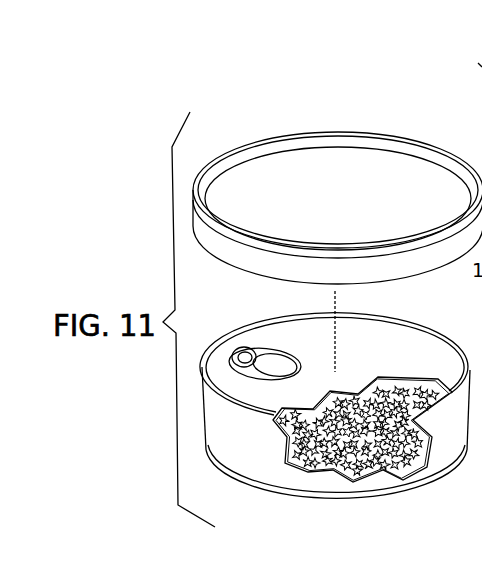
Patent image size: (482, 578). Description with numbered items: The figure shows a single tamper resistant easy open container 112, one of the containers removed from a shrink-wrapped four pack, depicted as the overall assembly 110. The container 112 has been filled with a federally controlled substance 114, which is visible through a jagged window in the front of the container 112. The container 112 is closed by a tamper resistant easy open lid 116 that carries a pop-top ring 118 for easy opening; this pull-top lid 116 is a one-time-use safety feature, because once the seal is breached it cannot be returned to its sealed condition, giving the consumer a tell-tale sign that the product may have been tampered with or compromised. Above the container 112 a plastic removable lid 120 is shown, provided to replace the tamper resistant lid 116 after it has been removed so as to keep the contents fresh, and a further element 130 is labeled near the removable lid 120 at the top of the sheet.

The container assembly 110 is at (227, 80).
The tamper resistant easy open container 112 is at (261, 463).
The federally controlled substance 114 is at (420, 462).
The tamper resistant easy open lid 116 is at (318, 348).
The pop-top ring 118 is at (257, 349).
The plastic removable lid 120 is at (337, 160).
The closure 130 is at (468, 54).